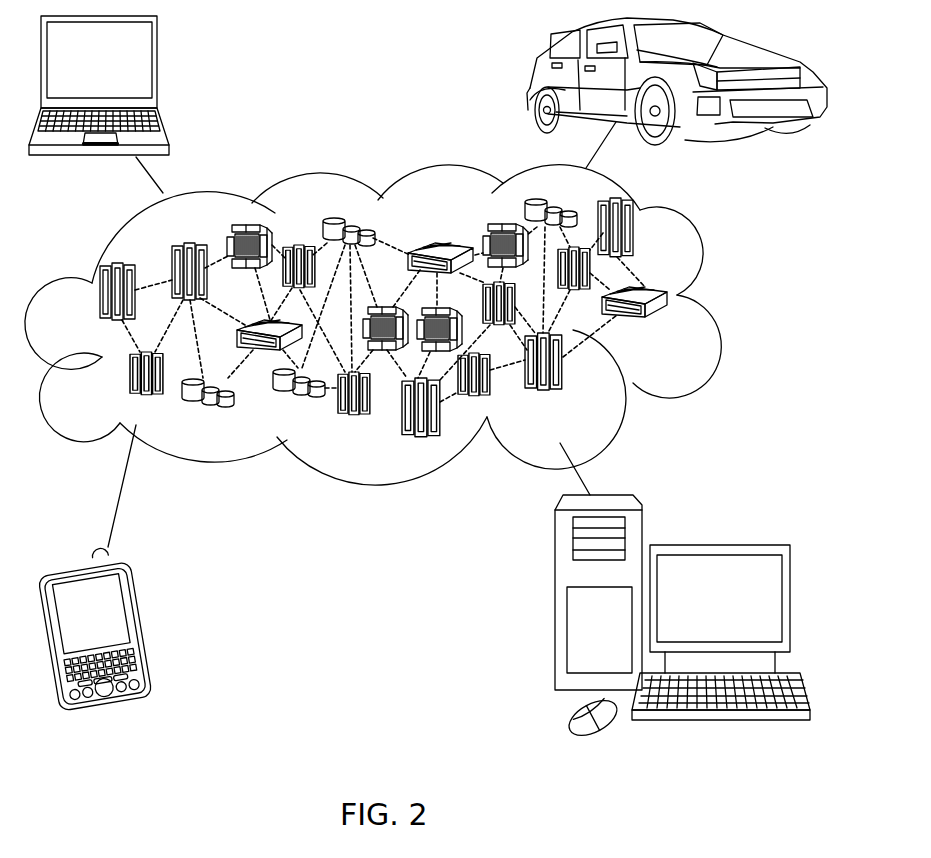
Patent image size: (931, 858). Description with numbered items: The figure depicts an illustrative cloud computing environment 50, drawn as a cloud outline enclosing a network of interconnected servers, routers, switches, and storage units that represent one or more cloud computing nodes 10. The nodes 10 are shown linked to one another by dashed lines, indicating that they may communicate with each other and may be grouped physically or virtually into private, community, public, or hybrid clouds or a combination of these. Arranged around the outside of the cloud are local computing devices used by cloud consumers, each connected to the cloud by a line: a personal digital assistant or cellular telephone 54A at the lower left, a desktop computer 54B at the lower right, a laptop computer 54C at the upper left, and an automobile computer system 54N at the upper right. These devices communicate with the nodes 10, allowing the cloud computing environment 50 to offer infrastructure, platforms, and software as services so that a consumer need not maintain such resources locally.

The cloud computing nodes 10 is at (700, 343).
The cloud computing environment 50 is at (717, 302).
The personal digital assistant or cellular telephone 54A is at (152, 627).
The desktop computer 54B is at (737, 545).
The laptop computer 54C is at (157, 62).
The automobile computer system 54N is at (530, 78).